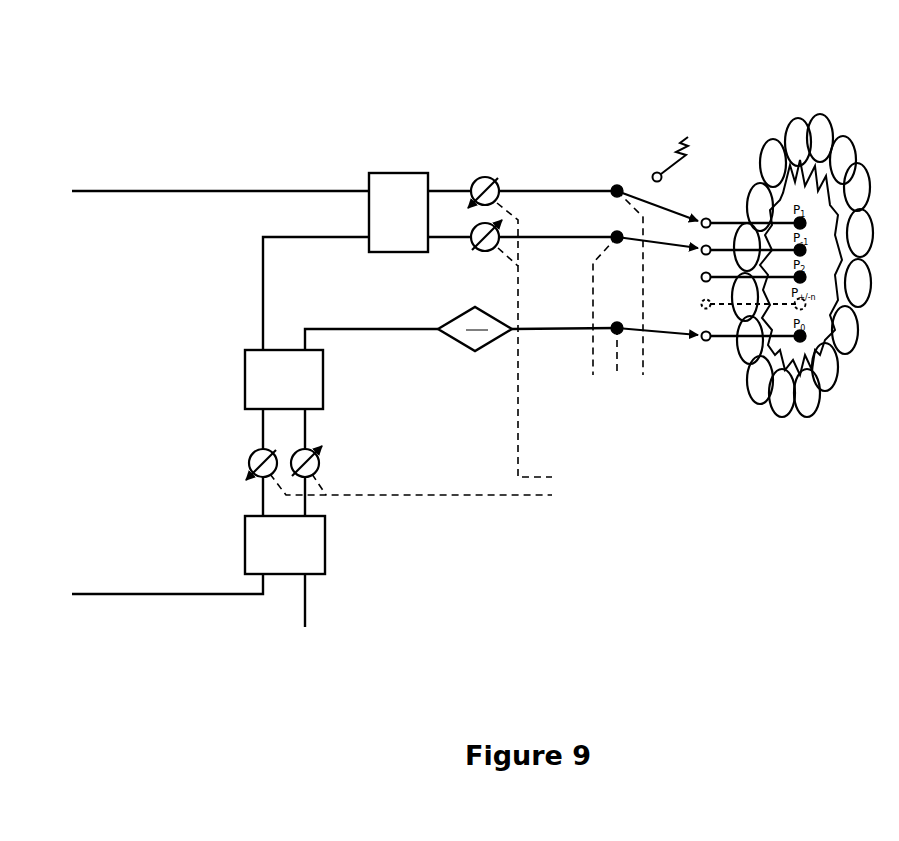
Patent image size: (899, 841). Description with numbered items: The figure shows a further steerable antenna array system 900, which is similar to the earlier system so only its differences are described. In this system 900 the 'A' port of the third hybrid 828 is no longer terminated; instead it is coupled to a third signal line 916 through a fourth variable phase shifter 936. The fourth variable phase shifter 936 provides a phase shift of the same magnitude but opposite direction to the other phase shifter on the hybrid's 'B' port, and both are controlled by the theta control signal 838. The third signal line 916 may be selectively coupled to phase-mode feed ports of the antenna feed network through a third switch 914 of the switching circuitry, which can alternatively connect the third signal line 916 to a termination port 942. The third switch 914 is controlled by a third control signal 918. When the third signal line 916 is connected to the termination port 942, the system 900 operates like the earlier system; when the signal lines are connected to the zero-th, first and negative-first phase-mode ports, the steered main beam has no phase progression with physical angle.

The steerable antenna array system 900 is at (558, 31).
The third hybrid 828 is at (382, 173).
The fourth variable phase shifter 936 is at (485, 177).
The third signal line 916 is at (556, 185).
The third switch 914 is at (614, 185).
The termination port 942 is at (686, 140).
The third control signal 918 is at (643, 352).
The control signal θ 838 is at (538, 472).